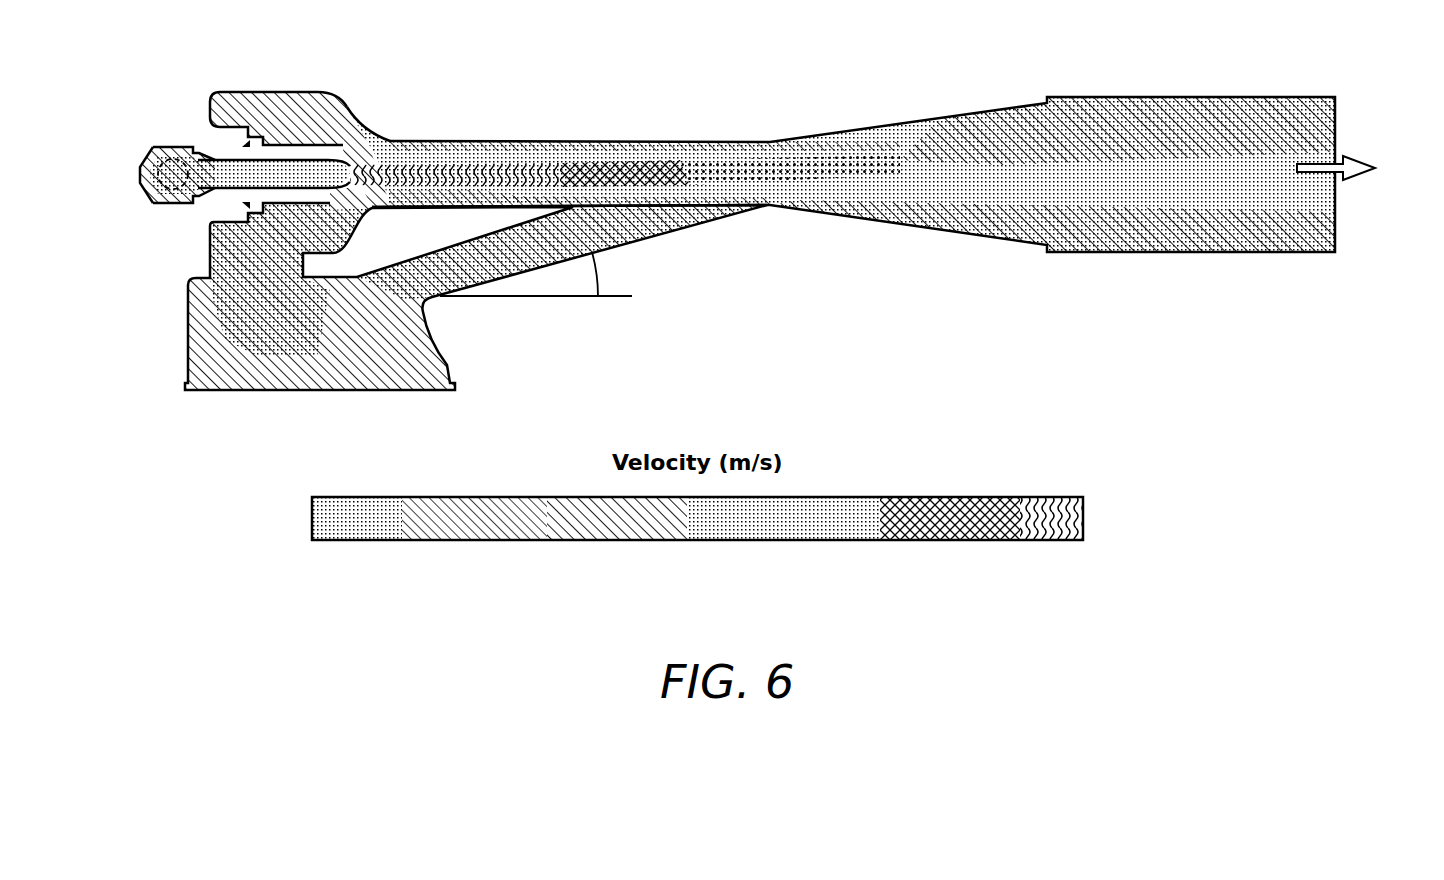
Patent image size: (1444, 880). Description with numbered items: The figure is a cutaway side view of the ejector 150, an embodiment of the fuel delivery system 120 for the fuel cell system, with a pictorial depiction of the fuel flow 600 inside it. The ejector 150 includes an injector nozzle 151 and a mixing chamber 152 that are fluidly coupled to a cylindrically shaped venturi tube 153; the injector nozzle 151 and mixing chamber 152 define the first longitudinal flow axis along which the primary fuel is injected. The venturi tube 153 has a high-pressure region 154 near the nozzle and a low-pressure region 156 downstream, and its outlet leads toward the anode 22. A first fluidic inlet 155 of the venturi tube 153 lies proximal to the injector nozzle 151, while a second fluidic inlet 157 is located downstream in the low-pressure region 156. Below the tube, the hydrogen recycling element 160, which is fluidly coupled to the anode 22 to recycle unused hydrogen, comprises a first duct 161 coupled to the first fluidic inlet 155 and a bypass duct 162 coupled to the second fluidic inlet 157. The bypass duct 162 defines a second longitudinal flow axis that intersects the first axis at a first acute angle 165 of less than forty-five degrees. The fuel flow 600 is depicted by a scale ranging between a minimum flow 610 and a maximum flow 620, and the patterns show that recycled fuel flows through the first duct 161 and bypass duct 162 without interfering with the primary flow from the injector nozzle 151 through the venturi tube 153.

The fuel delivery system 120 is at (167, 173).
The ejector 150 is at (560, 115).
The injector nozzle 151 is at (290, 153).
The mixing chamber 152 is at (340, 100).
The venturi tube 153 is at (623, 140).
The high-pressure region 154 is at (363, 127).
The first fluidic inlet 155 is at (300, 228).
The low-pressure region 156 is at (718, 138).
The second fluidic inlet 157 is at (615, 207).
The hydrogen recycling element 160 is at (245, 318).
The first duct 161 is at (255, 288).
The bypass duct 162 is at (463, 245).
The first acute angle 165 is at (605, 262).
The anode 22 is at (1367, 168).
The fuel flow 600 is at (703, 561).
The minimum flow 610 is at (349, 533).
The maximum flow 620 is at (1065, 533).